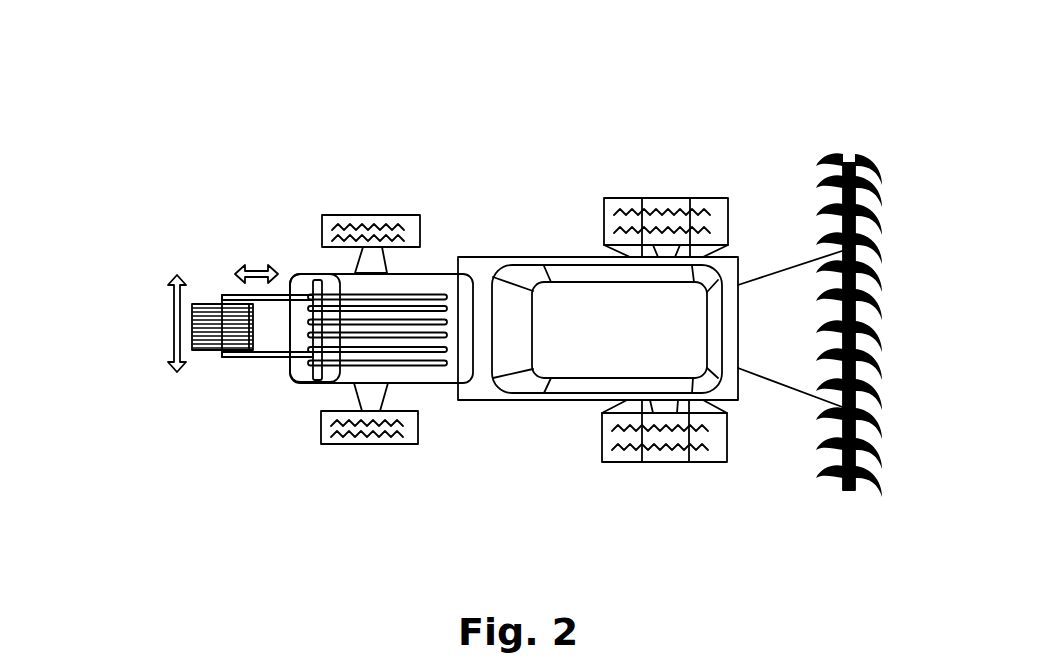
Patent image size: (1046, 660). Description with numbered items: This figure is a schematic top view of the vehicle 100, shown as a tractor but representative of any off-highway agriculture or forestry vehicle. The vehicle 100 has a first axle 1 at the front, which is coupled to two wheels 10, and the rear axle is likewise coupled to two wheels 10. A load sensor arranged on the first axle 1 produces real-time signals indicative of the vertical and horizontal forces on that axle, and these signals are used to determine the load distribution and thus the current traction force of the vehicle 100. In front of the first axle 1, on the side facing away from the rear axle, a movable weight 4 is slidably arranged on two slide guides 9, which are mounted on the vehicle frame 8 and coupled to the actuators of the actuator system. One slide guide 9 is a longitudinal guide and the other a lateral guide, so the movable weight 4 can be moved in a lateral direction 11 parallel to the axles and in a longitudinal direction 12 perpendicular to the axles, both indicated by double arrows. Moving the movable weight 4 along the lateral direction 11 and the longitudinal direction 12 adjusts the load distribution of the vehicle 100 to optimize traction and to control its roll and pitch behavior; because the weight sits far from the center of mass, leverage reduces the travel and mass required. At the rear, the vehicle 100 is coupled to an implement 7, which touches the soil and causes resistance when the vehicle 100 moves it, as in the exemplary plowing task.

The vehicle 100 is at (678, 118).
The first axle 1 is at (383, 270).
The movable weight 4 is at (203, 350).
The implement 7 is at (880, 293).
The vehicle frame 8 is at (335, 276).
The slide guides 9 is at (248, 357).
The wheels 10 is at (352, 215).
The lateral direction 11 is at (170, 322).
The longitudinal direction 12 is at (253, 265).